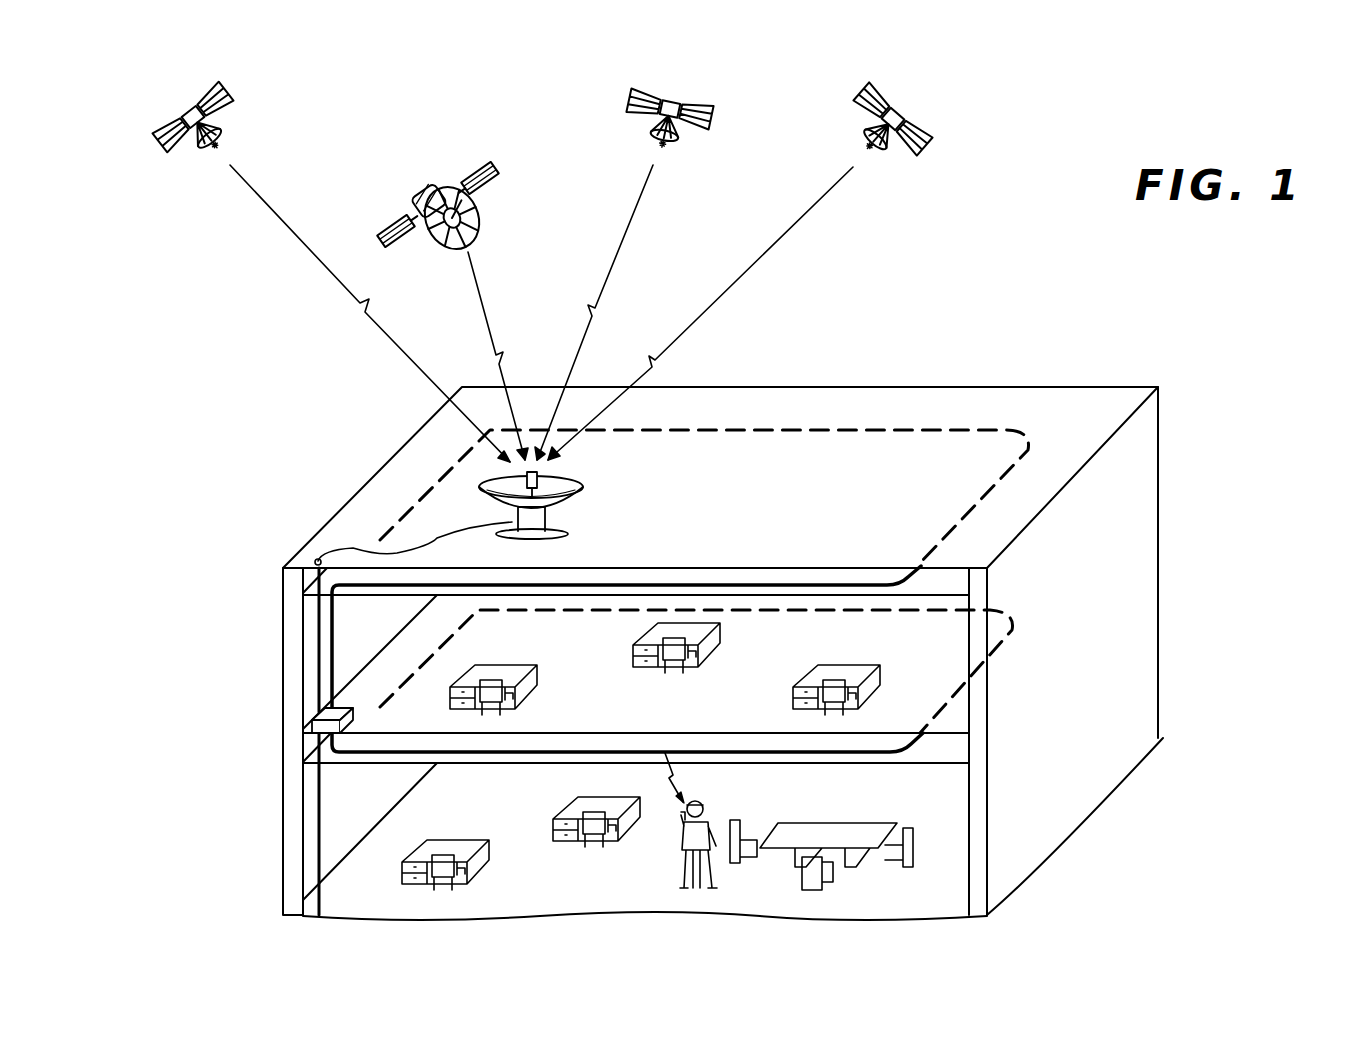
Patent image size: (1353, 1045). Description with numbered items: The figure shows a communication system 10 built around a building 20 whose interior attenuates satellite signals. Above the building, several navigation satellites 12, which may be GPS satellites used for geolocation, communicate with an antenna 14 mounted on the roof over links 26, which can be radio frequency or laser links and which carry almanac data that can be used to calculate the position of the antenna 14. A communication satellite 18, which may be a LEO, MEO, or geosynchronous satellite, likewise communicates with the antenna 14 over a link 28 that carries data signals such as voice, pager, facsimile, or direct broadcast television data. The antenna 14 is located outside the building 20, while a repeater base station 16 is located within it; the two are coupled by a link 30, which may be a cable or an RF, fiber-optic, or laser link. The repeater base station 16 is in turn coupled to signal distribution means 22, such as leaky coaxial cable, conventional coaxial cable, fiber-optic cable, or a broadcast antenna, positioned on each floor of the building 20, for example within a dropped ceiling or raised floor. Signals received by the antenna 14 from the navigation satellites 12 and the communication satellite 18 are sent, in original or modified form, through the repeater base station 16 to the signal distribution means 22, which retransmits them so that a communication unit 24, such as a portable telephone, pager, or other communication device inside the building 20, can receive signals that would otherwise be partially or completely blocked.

The communication system 10 is at (1233, 261).
The navigation satellites 12 is at (183, 102).
The antenna 14 is at (570, 503).
The repeater base station 16 is at (353, 722).
The communication satellite 18 is at (413, 193).
The building 20 is at (1073, 806).
The signal distribution means 22 is at (765, 583).
The communication unit 24 is at (683, 813).
The links 26 is at (307, 252).
The link 28 is at (483, 313).
The link 30 is at (352, 548).